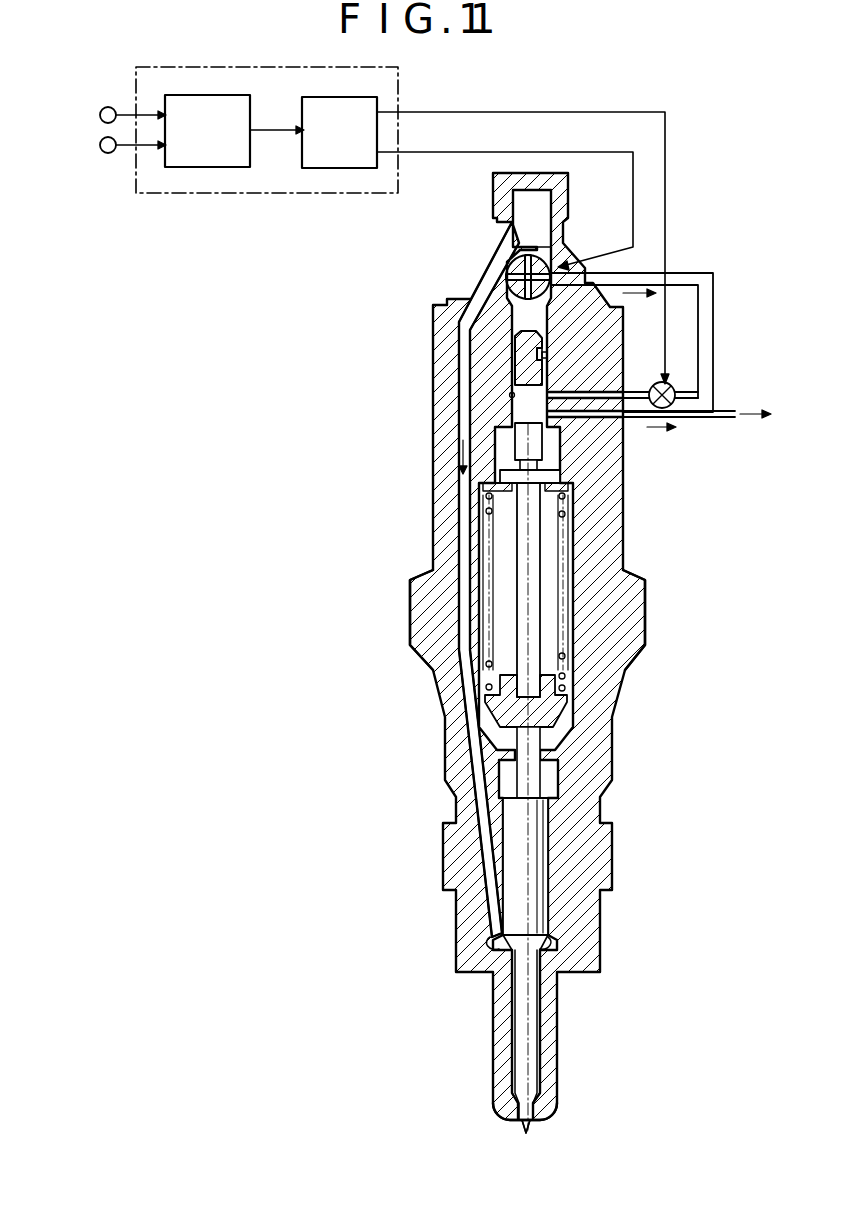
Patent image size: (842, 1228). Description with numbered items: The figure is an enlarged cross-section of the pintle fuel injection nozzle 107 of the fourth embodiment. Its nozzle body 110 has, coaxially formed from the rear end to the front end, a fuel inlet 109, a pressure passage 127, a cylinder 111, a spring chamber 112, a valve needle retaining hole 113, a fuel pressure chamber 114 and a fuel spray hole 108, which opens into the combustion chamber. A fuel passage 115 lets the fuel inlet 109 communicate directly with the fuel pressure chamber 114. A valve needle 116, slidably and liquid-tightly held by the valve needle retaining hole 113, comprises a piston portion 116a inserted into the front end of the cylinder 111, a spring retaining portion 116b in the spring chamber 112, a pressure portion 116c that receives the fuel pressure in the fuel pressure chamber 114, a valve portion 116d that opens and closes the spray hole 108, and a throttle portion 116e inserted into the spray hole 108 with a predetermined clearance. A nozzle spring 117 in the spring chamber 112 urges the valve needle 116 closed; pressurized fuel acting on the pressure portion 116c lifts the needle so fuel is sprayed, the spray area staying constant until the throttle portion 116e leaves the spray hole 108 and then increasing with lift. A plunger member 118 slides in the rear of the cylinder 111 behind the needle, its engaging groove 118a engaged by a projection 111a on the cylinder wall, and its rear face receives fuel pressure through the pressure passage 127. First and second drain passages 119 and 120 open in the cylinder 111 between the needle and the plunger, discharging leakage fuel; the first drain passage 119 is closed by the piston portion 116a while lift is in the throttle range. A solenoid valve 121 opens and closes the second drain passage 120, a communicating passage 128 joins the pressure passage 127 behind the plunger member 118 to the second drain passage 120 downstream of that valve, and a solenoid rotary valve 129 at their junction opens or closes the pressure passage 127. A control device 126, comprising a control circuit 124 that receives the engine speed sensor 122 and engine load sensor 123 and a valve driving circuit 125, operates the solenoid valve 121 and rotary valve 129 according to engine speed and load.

The pintle fuel injection nozzle 107 is at (428, 455).
The fuel spray hole 108 is at (518, 1122).
The fuel inlet 109 is at (519, 178).
The nozzle body 110 is at (630, 544).
The cylinder 111 is at (509, 396).
The projection 111a is at (549, 356).
The spring chamber 112 is at (500, 534).
The valve needle retaining hole 113 is at (506, 858).
The fuel pressure chamber 114 is at (490, 942).
The fuel passage 115 is at (456, 630).
The valve needle 116 is at (554, 835).
The piston portion 116a is at (543, 443).
The spring retaining portion 116b is at (577, 707).
The pressure portion 116c is at (549, 945).
The valve portion 116d is at (540, 1103).
The throttle portion 116e is at (532, 1123).
The nozzle spring 117 is at (573, 657).
The plunger member 118 is at (513, 348).
The engaging groove 118a is at (549, 370).
The first drain passage 119 is at (692, 418).
The second drain passage 120 is at (676, 393).
The solenoid valve 121 is at (668, 383).
The engine speed sensor 122 is at (100, 115).
The engine load sensor 123 is at (100, 145).
The control circuit 124 is at (228, 142).
The valve driving circuit 125 is at (360, 142).
The control device 126 is at (250, 194).
The pressure passage 127 is at (527, 240).
The communicating passage 128 is at (704, 272).
The solenoid rotary valve 129 is at (498, 294).